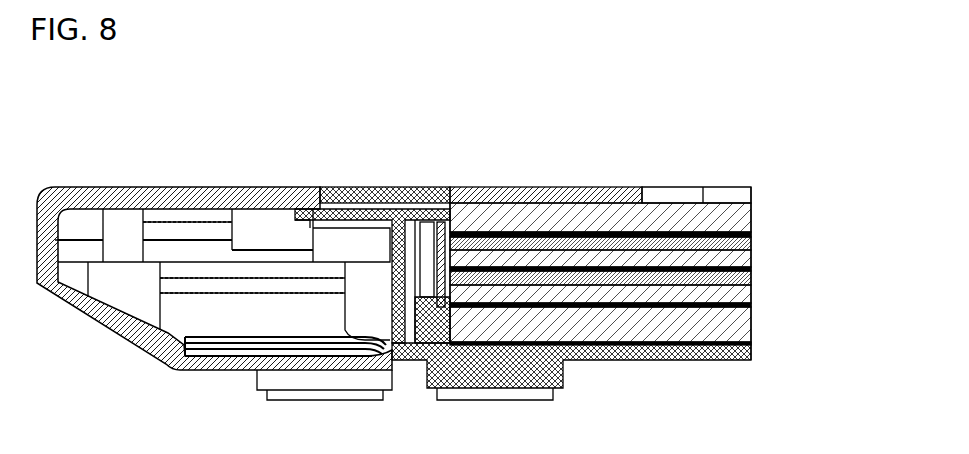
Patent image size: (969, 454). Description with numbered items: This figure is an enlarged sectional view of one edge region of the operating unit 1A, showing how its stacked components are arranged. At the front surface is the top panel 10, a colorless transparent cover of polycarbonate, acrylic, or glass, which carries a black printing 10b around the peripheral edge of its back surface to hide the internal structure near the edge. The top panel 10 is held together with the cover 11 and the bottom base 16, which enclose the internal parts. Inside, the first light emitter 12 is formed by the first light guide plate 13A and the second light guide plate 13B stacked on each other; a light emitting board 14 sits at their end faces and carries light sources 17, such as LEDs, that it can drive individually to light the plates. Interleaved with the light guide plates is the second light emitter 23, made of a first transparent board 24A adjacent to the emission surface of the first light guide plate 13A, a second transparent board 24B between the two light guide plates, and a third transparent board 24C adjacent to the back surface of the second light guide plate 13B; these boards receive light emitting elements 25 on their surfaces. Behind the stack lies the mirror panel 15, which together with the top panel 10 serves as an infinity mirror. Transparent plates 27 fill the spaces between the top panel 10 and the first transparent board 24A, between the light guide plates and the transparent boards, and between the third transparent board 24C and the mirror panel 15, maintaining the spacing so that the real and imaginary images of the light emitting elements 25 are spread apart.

The operating unit 1A is at (723, 101).
The top panel 10 is at (376, 187).
The black printing 10b is at (483, 187).
The cover 11 is at (168, 187).
The first light emitter 12 is at (643, 148).
The first light guide plate 13A is at (572, 187).
The second light guide plate 13B is at (620, 187).
The light emitting board 14 is at (424, 187).
The mirror panel 15 is at (751, 342).
The bottom base 16 is at (215, 365).
The light source 17 is at (444, 222).
The second light emitter 23 is at (805, 216).
The first transparent board 24A is at (751, 234).
The second transparent board 24B is at (751, 269).
The third transparent board 24C is at (751, 305).
The light emitting element 25 is at (690, 306).
The transparent plate 27 is at (702, 322).